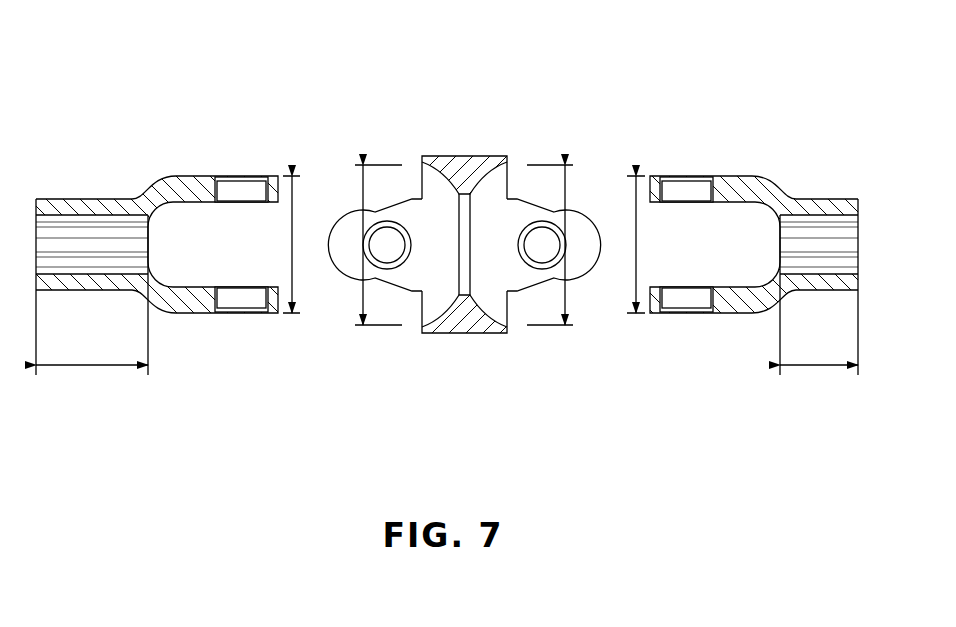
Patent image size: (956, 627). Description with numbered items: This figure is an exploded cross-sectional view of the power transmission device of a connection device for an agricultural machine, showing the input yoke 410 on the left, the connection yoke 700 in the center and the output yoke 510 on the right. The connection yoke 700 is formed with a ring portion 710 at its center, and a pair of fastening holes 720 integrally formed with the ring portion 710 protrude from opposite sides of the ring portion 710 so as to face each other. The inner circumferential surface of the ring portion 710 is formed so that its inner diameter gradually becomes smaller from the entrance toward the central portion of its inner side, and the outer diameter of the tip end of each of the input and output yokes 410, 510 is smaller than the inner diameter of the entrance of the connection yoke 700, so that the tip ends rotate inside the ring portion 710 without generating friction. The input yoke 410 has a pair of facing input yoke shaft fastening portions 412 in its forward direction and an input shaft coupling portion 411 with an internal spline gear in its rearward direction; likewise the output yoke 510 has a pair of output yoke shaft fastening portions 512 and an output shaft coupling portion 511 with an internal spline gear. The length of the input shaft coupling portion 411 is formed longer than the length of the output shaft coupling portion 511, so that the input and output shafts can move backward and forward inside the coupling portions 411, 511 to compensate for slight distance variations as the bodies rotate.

The input yoke 410 is at (150, 89).
The input shaft coupling portion 411 is at (68, 203).
The input yoke shaft fastening portions 412 is at (173, 187).
The connection yoke 700 is at (567, 73).
The ring portion 710 is at (458, 167).
The fastening holes 720 is at (407, 213).
The output yoke 510 is at (755, 93).
The output shaft coupling portion 511 is at (828, 203).
The output yoke shaft fastening portions 512 is at (733, 185).